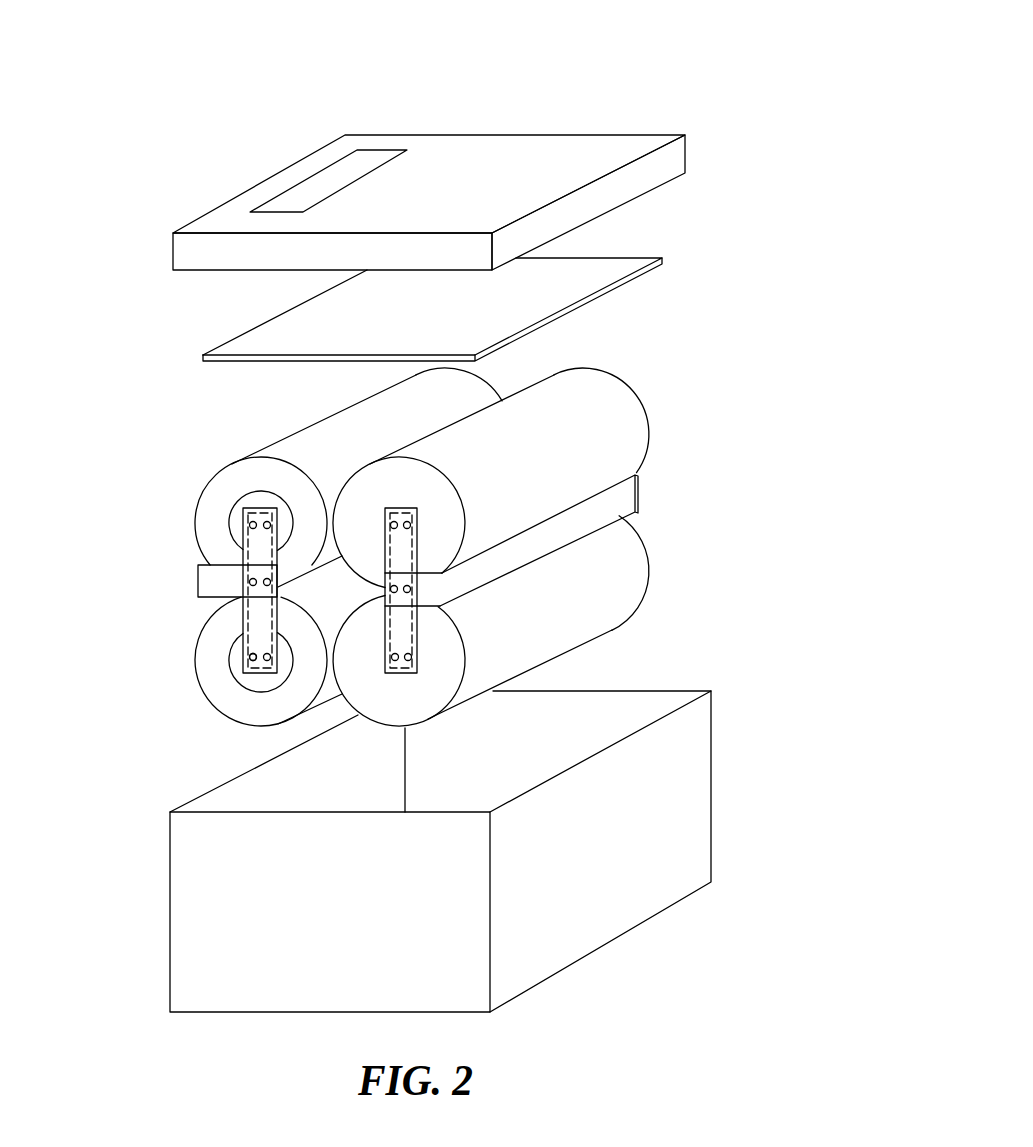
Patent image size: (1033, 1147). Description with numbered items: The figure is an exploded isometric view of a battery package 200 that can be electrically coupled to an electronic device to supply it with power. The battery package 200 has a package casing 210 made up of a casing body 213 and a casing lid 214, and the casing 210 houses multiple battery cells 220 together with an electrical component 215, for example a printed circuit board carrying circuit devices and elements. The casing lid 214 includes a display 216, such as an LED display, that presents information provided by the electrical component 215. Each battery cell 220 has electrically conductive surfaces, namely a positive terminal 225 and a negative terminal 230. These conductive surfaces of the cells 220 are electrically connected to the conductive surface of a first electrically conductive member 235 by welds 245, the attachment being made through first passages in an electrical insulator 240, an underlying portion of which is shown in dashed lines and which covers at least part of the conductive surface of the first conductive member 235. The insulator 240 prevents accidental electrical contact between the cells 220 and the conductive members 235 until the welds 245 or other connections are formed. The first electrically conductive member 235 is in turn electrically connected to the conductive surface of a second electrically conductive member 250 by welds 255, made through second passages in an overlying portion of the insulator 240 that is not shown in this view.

The battery package 200 is at (749, 114).
The package casing 210 is at (160, 255).
The casing body 213 is at (189, 983).
The casing lid 214 is at (532, 148).
The electrical component 215 is at (657, 264).
The display 216 is at (290, 188).
The battery cells 220 is at (612, 412).
The positive terminal 225 is at (229, 529).
The negative terminal 230 is at (367, 482).
The first electrically conductive member 235 is at (252, 657).
The electrical insulator 240 is at (244, 628).
The welds 245 is at (254, 658).
The second electrically conductive member 250 is at (198, 582).
The welds 255 is at (413, 589).